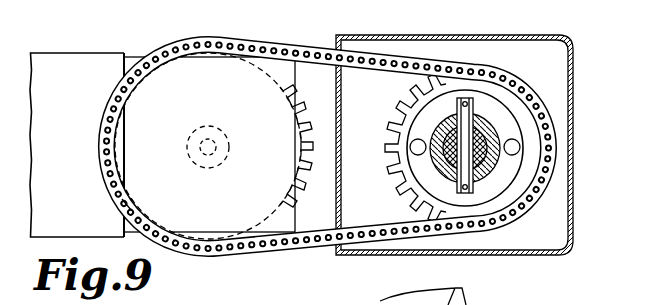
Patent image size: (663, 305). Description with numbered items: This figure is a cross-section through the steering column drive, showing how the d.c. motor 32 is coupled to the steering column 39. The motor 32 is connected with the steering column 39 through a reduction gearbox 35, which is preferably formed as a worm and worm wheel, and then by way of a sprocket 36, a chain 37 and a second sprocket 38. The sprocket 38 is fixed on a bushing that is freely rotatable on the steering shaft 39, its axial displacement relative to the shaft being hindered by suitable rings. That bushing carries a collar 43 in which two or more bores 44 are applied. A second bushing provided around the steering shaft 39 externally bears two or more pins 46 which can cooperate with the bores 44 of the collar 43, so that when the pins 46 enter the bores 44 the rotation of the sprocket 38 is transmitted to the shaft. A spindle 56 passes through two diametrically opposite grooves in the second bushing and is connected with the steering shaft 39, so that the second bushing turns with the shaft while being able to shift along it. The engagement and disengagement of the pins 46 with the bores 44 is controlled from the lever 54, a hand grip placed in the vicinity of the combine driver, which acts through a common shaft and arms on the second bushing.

The d.c. motor 32 is at (78, 60).
The reduction gearbox 35 is at (133, 200).
The sprocket 36 is at (303, 101).
The chain 37 is at (300, 46).
The sprocket 38 is at (530, 143).
The steering column 39 is at (525, 195).
The collar 43 is at (482, 158).
The bores 44 is at (414, 142).
The pins 46 is at (418, 156).
The spindle 56 is at (473, 112).
The lever 54 is at (442, 296).